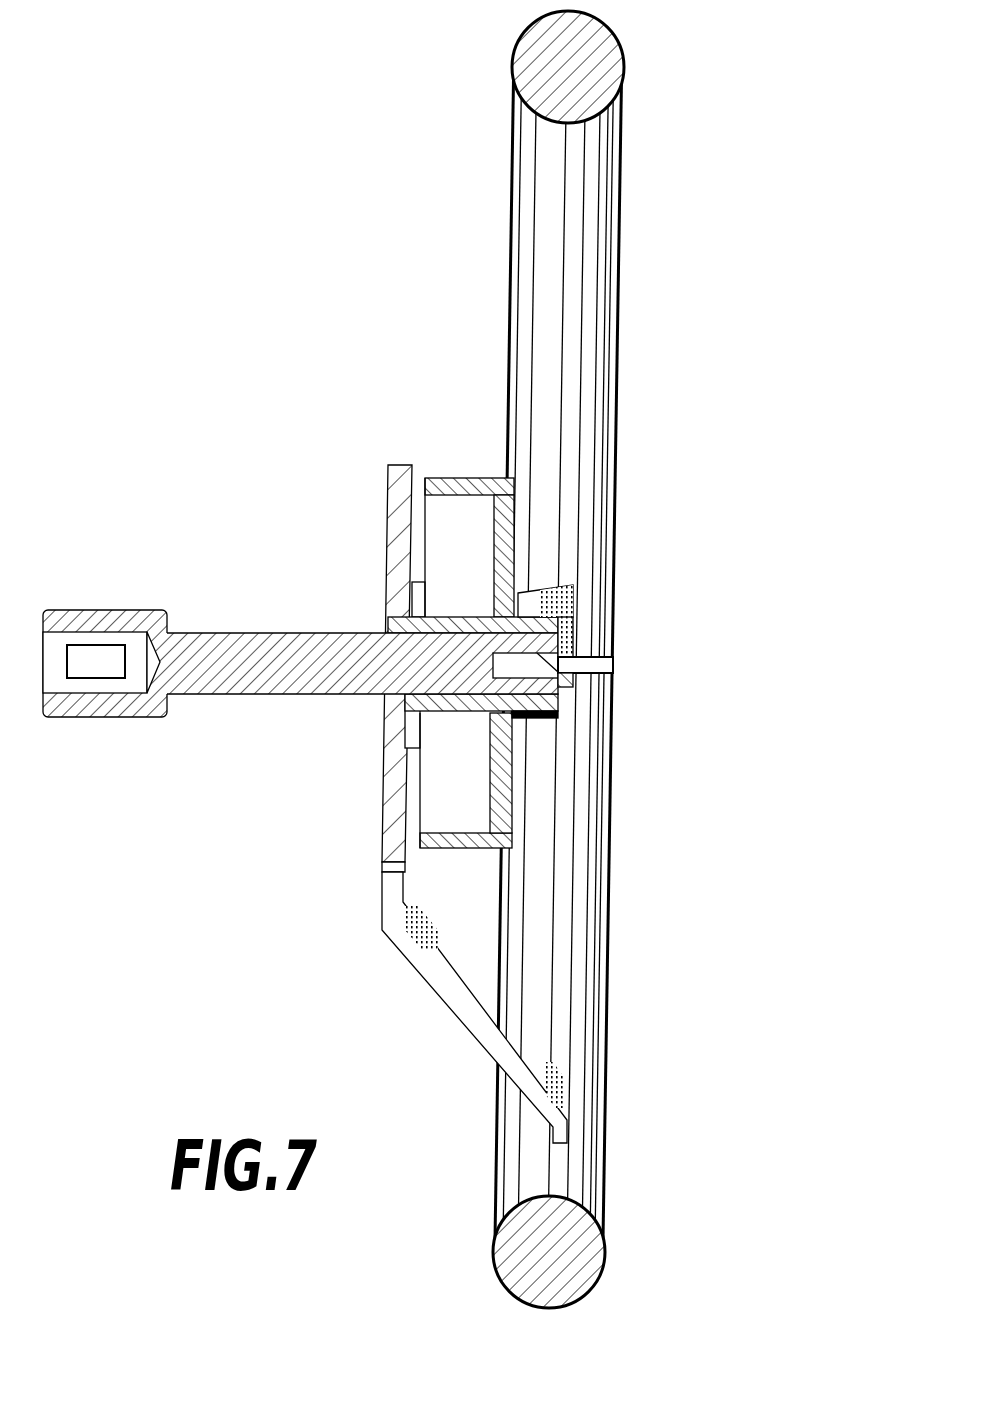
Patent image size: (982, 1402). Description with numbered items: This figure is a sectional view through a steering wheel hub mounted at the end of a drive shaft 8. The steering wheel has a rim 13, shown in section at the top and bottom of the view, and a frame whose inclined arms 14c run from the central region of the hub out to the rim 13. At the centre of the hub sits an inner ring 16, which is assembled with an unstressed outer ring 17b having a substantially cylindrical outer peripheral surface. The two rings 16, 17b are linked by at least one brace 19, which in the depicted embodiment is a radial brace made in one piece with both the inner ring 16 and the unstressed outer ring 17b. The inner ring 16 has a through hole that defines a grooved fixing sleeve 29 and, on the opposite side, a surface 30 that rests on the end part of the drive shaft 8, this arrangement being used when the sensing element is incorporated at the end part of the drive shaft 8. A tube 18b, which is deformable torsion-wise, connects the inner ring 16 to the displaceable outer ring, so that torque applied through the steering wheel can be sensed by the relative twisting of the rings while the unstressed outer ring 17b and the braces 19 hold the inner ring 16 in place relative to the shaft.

The drive shaft 8 is at (323, 670).
The rim 13 is at (646, 75).
The inclined arms 14c is at (482, 998).
The inner ring 16 is at (562, 625).
The unstressed outer ring 17b is at (545, 489).
The tube, deformable torsion-wise 18b is at (460, 728).
The brace 19 is at (507, 535).
The grooved fixing sleeve 29 is at (565, 680).
The surface for resting 30 is at (537, 713).